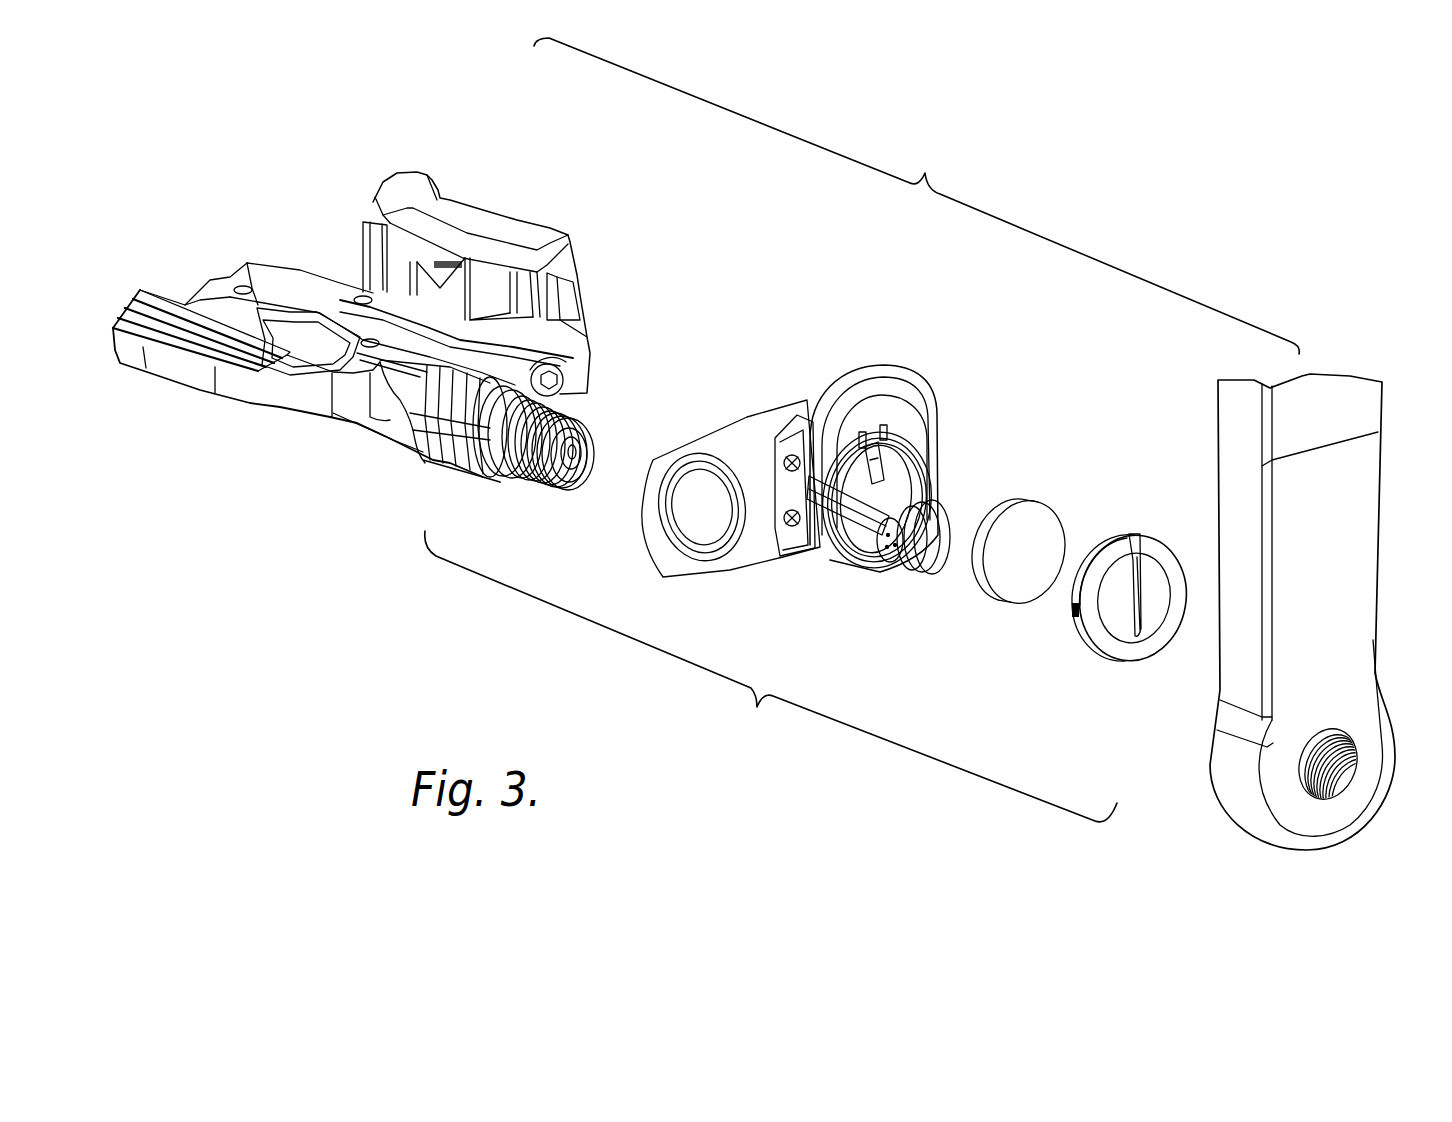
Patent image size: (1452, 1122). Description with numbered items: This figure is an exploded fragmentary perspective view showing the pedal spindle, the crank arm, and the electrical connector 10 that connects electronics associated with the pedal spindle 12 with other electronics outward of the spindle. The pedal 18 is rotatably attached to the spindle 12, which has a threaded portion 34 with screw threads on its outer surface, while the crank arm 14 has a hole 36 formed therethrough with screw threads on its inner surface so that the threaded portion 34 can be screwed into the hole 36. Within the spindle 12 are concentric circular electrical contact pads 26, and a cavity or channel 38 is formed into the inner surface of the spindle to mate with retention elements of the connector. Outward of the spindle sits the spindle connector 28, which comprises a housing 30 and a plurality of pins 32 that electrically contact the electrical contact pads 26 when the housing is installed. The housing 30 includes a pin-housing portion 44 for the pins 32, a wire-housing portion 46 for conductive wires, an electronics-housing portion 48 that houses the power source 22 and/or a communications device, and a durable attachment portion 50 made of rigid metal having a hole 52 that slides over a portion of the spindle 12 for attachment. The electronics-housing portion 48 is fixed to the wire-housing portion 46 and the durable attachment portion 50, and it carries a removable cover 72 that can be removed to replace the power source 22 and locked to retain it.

The electrical connector 10 is at (862, 430).
The pedal spindle 12 is at (381, 354).
The crank arm 14 is at (1328, 626).
The pedal 18 is at (193, 297).
The power source 22 is at (1030, 503).
The electrical contact pads 26 is at (515, 448).
The spindle connector 28 is at (852, 500).
The housing 30 is at (902, 441).
The pins 32 is at (859, 604).
The threaded portion 34 is at (533, 481).
The hole 36 is at (1333, 775).
The cavity or channel 38 is at (573, 483).
The pin-housing portion 44 is at (940, 513).
The wire-housing portion 46 is at (843, 547).
The electronics-housing portion 48 is at (913, 400).
The durable attachment portion 50 is at (731, 503).
The hole 52 is at (705, 530).
The removable cover 72 is at (1168, 555).